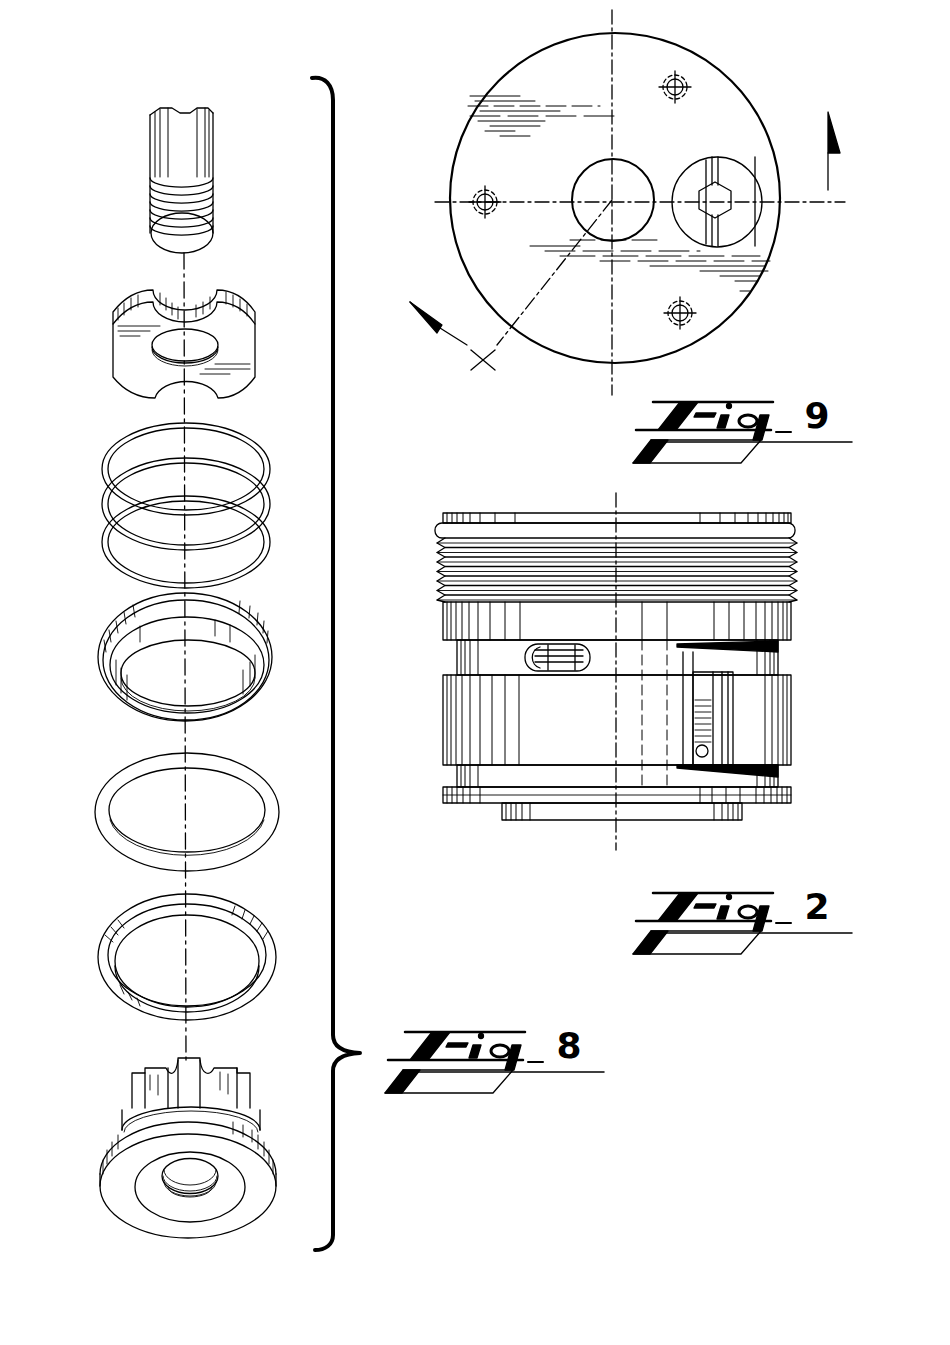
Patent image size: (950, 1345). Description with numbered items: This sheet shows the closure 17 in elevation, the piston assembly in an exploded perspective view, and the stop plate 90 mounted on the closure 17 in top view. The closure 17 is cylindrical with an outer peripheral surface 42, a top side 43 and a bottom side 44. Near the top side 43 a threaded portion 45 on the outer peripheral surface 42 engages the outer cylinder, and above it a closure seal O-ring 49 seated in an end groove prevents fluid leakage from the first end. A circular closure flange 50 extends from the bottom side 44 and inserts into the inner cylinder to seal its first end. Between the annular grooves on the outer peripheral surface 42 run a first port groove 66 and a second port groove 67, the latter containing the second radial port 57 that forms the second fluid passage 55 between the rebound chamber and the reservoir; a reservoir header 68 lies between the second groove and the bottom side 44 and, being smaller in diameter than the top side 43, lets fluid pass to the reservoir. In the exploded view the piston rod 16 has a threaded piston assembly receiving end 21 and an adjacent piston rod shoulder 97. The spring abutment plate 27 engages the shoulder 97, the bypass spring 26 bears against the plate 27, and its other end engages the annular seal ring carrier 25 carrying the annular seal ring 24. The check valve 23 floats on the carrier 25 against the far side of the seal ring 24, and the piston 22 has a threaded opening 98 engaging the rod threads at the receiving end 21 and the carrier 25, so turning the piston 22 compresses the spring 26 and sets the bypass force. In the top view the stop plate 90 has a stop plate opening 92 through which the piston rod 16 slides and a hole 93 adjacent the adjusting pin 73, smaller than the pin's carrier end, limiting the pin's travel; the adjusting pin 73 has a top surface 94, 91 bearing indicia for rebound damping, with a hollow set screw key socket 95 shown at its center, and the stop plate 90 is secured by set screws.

In FIG. 8, the piston rod 16 is at (183, 130).
In FIG. 8, the piston rod shoulder 97 is at (197, 190).
In FIG. 8, the piston assembly receiving end 21 is at (213, 243).
In FIG. 8, the spring abutment plate 27 is at (113, 332).
In FIG. 8, the bypass spring 26 is at (108, 488).
In FIG. 8, the annular seal ring carrier 25 is at (100, 640).
In FIG. 8, the annular seal ring 24 is at (107, 843).
In FIG. 8, the check valve 23 is at (100, 947).
In FIG. 8, the piston 22 is at (112, 1215).
In FIG. 8, the threaded opening 98 is at (197, 1185).
In FIG. 2, the closure 17 is at (815, 568).
In FIG. 2, the top side 43 is at (494, 513).
In FIG. 2, the closure seal O-ring 49 is at (439, 529).
In FIG. 2, the threaded portion 45 is at (795, 556).
In FIG. 2, the outer peripheral surface 42 is at (444, 633).
In FIG. 2, the first port groove 66 is at (447, 797).
In FIG. 2, the second port groove 67 is at (705, 686).
In FIG. 2, the second radial port 57 is at (703, 745).
In FIG. 2, the second fluid passage 55 is at (697, 763).
In FIG. 2, the reservoir header 68 is at (445, 800).
In FIG. 2, the bottom side 44 is at (470, 803).
In FIG. 2, the closure flange 50 is at (561, 812).
In FIG. 9, the stop plate 90 is at (740, 297).
In FIG. 9, the stop plate opening 92 is at (588, 213).
In FIG. 9, the adjusting pin 73 is at (748, 163).
In FIG. 9, the hex socket 95 is at (727, 182).
In FIG. 9, the hole 93 is at (748, 230).
In FIG. 9, the top surface 94 is at (692, 222).
In FIG. 9, the top surface 91 is at (680, 72).